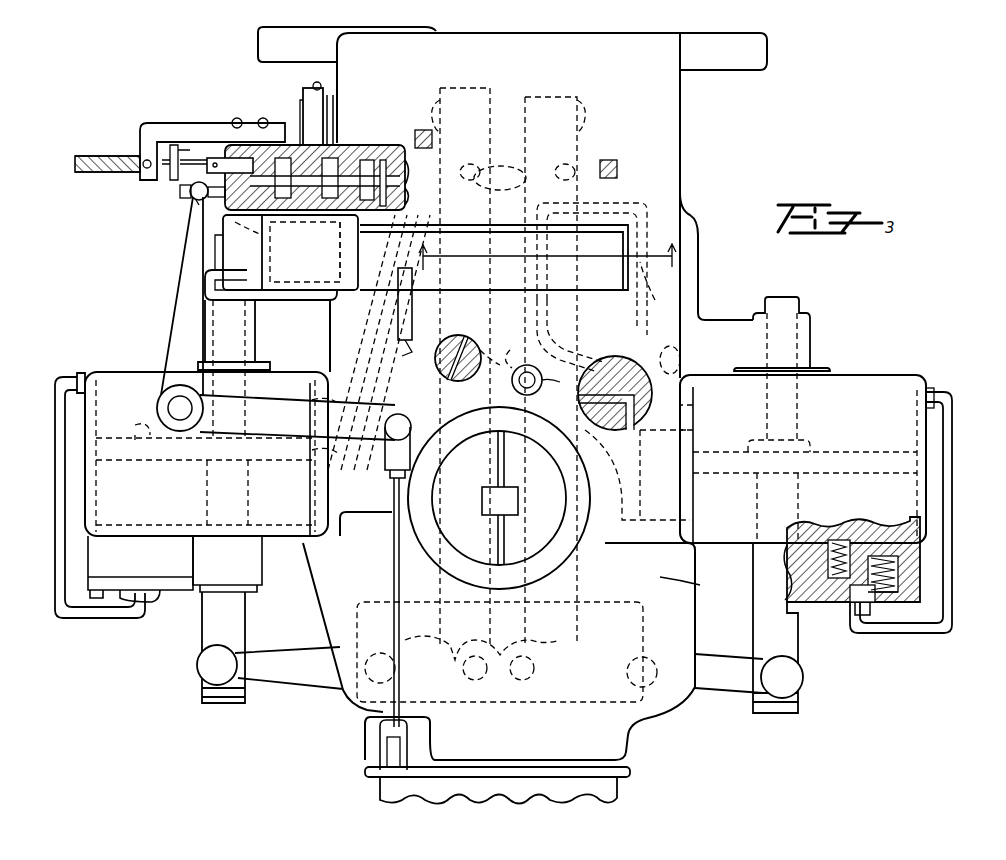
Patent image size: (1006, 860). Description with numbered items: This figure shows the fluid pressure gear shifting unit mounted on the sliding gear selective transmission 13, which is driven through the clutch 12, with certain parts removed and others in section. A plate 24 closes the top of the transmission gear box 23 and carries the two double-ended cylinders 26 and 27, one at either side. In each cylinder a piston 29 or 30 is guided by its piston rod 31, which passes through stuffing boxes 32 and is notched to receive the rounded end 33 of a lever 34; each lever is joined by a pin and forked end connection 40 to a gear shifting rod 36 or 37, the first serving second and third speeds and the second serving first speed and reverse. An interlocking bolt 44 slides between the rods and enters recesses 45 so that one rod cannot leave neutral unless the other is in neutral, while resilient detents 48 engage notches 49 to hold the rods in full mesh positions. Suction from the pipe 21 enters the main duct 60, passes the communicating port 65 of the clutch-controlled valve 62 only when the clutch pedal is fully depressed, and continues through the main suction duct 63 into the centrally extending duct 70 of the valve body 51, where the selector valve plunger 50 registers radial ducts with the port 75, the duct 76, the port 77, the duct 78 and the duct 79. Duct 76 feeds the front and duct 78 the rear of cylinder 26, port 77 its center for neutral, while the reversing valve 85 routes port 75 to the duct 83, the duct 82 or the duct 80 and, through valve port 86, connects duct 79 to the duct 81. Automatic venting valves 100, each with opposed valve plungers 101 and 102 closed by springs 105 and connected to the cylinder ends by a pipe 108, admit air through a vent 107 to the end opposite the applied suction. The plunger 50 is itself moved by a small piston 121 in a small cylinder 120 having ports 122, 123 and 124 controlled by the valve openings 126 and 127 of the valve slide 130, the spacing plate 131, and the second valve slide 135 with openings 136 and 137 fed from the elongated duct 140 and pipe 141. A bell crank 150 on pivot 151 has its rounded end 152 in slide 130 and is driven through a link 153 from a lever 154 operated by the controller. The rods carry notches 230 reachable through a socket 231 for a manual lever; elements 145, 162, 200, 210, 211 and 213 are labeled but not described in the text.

The clutch 12 is at (550, 265).
The sliding gear selective transmission 13 is at (683, 134).
The pipe 21 is at (528, 393).
The transmission gear box 23 is at (696, 619).
The plate 24 is at (691, 585).
The double-ended cylinder 26 is at (85, 410).
The double-ended cylinder 27 is at (926, 440).
The piston 29 is at (133, 428).
The piston 30 is at (878, 445).
The piston rod 31 is at (245, 609).
The stuffing boxes 32 is at (257, 347).
The rounded end 33 is at (197, 665).
The lever 34 is at (298, 660).
The gear shifting rod 36 is at (479, 90).
The gear shifting rod 37 is at (558, 98).
The pin and forked end connection 40 is at (522, 682).
The interlocking bolt 44 is at (504, 170).
The recesses 45 is at (517, 164).
The resilient detents 48 is at (519, 142).
The notches 49 is at (443, 118).
The selector valve plunger 50 is at (668, 256).
The valve body 51 is at (625, 316).
The main duct 60 is at (489, 379).
The clutch-controlled valve 62 is at (448, 378).
The main suction duct 63 is at (518, 357).
The communicating port 65 is at (459, 370).
The centrally extending duct 70 is at (592, 259).
The port 75 is at (656, 283).
The duct 76 is at (379, 342).
The port 77 is at (330, 426).
The duct 78 is at (395, 478).
The duct 79 is at (570, 336).
The duct 80 is at (682, 360).
The duct 81 is at (637, 475).
The duct 82 is at (702, 420).
The duct 83 is at (640, 505).
The reversing valve 85 is at (606, 366).
The valve port 86 is at (553, 378).
The automatic venting valves 100 is at (93, 562).
The valve plunger 101 is at (800, 560).
The valve plunger 102 is at (920, 566).
The springs 105 is at (920, 586).
The vent 107 is at (920, 548).
The pipe 108 is at (55, 492).
The small cylinder 120 is at (290, 300).
The small piston 121 is at (334, 292).
The port 122 is at (250, 228).
The port 123 is at (304, 252).
The port 124 is at (494, 256).
The valve opening 126 is at (196, 200).
The valve opening 127 is at (401, 196).
The valve slide 130 is at (180, 190).
The spacing plate 131 is at (406, 172).
The valve slide 135 is at (245, 150).
The opening 136 is at (303, 110).
The opening 137 is at (338, 158).
The elongated duct 140 is at (331, 122).
The pipe 141 is at (318, 92).
The bracket 145 is at (240, 270).
The bell crank 150 is at (177, 325).
The pivot 151 is at (168, 407).
The rounded end 152 is at (195, 202).
The link 153 is at (393, 553).
The lever 154 is at (388, 750).
The base plate 162 is at (382, 790).
The stop 200 is at (398, 312).
The adjusting screw 210 is at (110, 173).
The land 211 is at (380, 160).
The bracket 213 is at (175, 145).
The notch 230 is at (518, 500).
The socket 231 is at (536, 440).